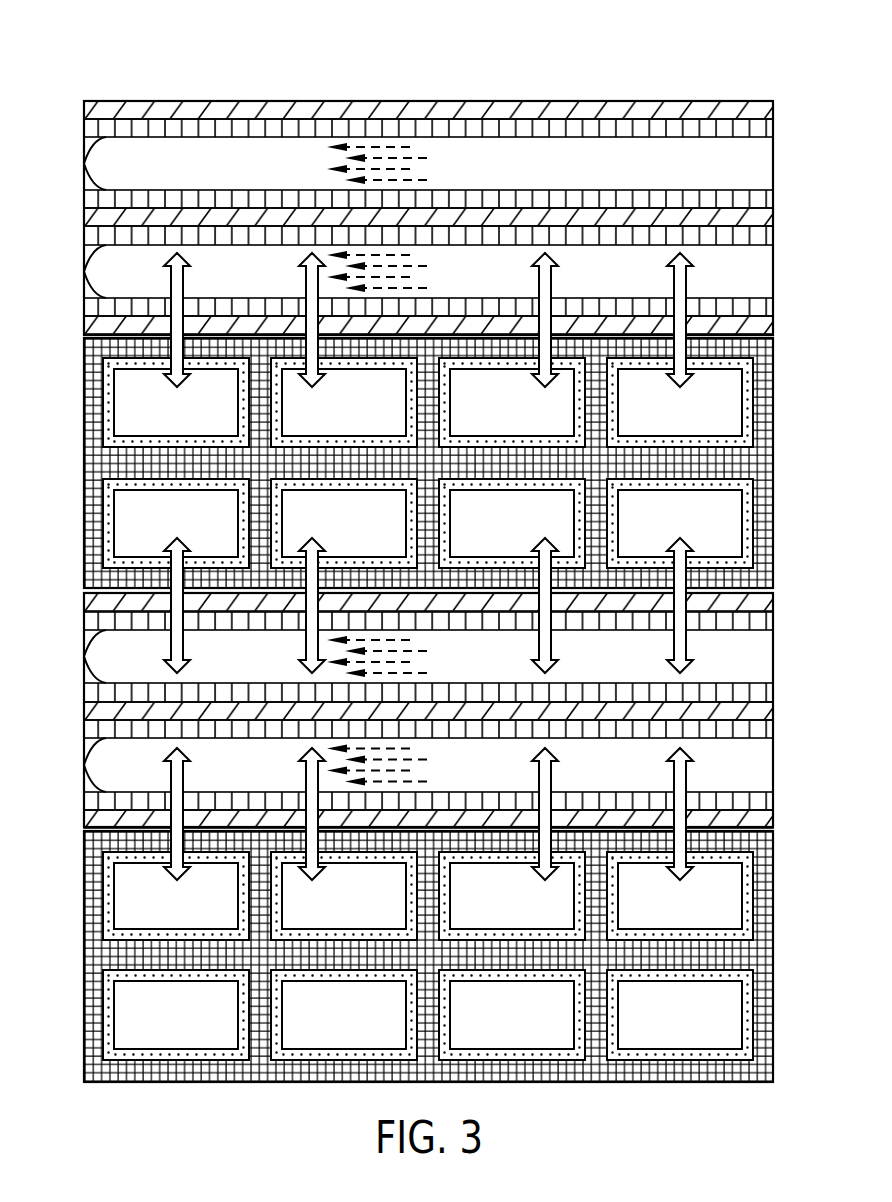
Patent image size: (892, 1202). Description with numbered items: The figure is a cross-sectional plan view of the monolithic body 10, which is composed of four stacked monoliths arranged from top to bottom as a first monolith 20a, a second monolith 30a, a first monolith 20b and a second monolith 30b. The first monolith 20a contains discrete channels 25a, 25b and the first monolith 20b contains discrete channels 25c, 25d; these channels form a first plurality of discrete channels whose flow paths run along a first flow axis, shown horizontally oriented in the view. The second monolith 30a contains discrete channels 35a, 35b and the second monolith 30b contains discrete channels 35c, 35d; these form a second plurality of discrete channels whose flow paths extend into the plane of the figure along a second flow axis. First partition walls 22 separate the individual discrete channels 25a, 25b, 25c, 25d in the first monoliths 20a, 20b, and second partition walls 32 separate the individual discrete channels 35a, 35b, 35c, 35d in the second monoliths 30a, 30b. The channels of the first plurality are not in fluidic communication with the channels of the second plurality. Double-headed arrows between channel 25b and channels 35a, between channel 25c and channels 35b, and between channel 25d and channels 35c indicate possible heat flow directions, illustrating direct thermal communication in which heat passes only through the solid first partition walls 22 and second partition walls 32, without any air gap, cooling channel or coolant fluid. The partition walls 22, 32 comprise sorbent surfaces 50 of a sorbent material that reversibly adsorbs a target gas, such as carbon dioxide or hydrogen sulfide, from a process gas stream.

The monolithic body 10 is at (120, 72).
The first monolith 20a is at (785, 101).
The first monolith 20b is at (785, 593).
The first partition walls 22 is at (98, 222).
The discrete channel 25a is at (486, 178).
The discrete channel 25b is at (486, 285).
The discrete channel 25c is at (486, 671).
The discrete channel 25d is at (486, 778).
The second monolith 30a is at (785, 338).
The second monolith 30b is at (785, 831).
The second partition walls 32 is at (97, 465).
The discrete channel 35a is at (695, 416).
The discrete channel 35b is at (695, 538).
The discrete channel 35c is at (695, 910).
The discrete channel 35d is at (695, 1030).
The sorbent surfaces 50 is at (83, 765).